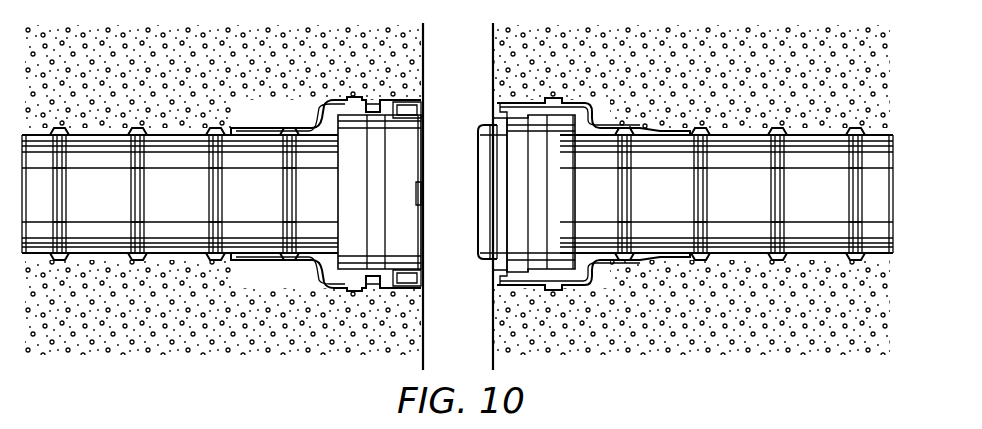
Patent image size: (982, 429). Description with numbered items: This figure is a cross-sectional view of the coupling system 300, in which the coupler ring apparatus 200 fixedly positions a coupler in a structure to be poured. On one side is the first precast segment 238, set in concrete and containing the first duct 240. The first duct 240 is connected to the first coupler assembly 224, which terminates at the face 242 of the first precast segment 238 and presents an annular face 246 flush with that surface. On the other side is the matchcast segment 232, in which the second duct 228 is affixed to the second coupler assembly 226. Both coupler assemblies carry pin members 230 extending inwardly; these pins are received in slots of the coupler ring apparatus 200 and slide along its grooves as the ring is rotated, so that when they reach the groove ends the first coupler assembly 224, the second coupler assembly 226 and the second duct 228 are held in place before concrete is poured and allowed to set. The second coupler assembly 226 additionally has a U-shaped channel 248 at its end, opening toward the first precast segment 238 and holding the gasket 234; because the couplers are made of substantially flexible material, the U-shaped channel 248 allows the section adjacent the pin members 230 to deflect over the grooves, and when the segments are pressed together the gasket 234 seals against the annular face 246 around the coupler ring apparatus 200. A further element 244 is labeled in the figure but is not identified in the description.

The coupler ring apparatus 200 is at (483, 178).
The first coupler assembly 224 is at (610, 125).
The second coupler assembly 226 is at (320, 100).
The second duct 228 is at (110, 128).
The pin members 230 is at (422, 132).
The matchcast segment 232 is at (186, 97).
The gasket 234 is at (422, 106).
The first precast segment 238 is at (745, 97).
The first duct 240 is at (790, 128).
The face of the first precast segment 242 is at (492, 70).
The first wall face 244 is at (424, 320).
The annular face 246 is at (498, 106).
The U-shaped channel 248 is at (410, 100).
The coupling system 300 is at (785, 86).